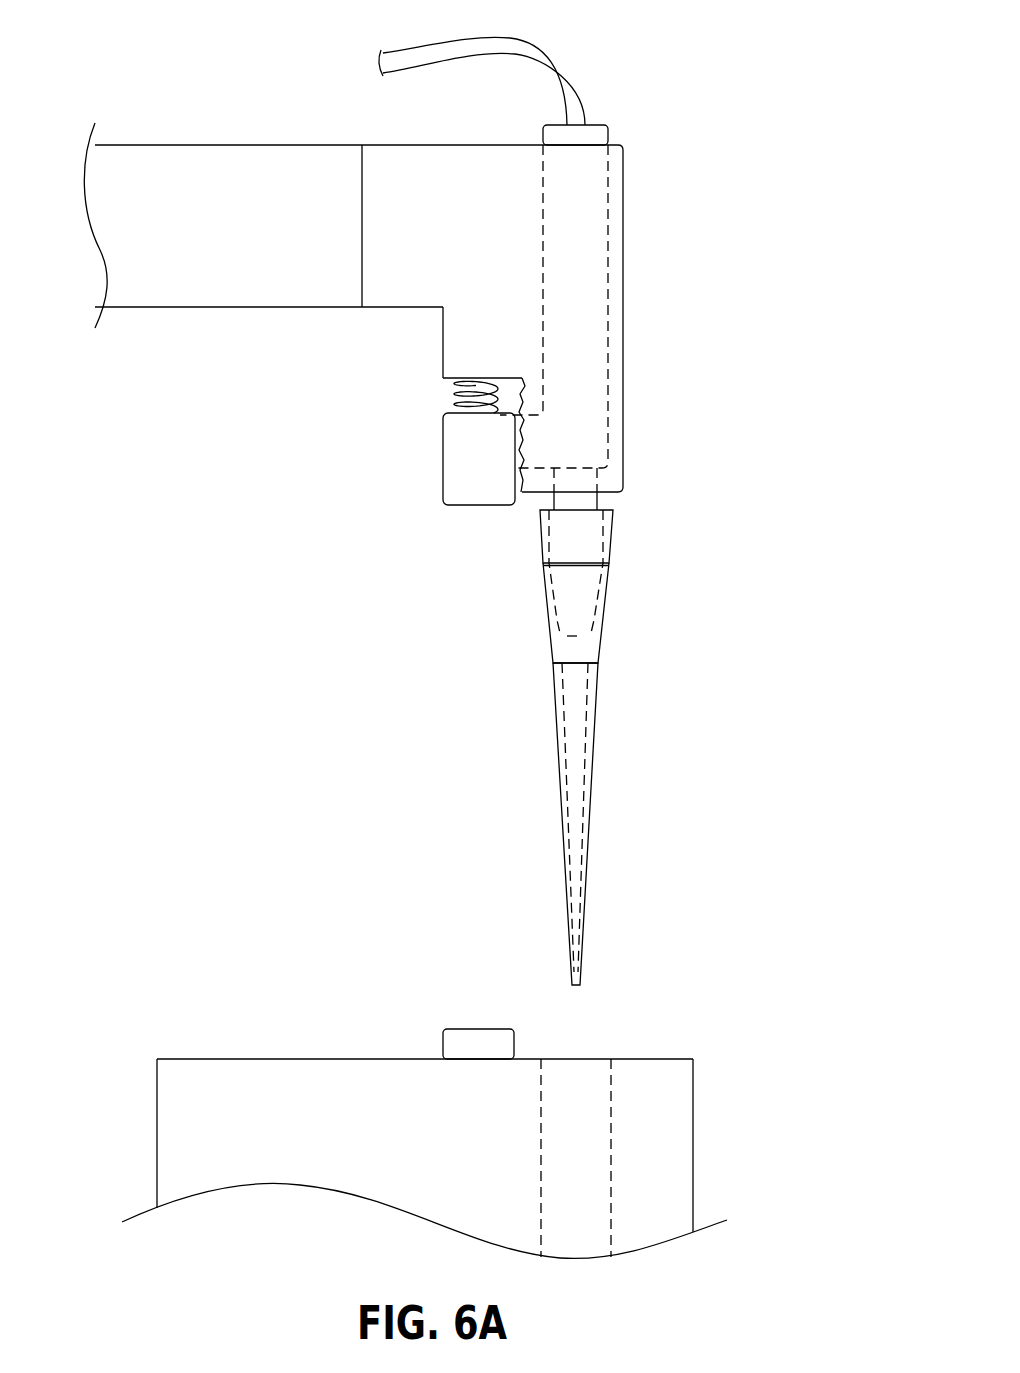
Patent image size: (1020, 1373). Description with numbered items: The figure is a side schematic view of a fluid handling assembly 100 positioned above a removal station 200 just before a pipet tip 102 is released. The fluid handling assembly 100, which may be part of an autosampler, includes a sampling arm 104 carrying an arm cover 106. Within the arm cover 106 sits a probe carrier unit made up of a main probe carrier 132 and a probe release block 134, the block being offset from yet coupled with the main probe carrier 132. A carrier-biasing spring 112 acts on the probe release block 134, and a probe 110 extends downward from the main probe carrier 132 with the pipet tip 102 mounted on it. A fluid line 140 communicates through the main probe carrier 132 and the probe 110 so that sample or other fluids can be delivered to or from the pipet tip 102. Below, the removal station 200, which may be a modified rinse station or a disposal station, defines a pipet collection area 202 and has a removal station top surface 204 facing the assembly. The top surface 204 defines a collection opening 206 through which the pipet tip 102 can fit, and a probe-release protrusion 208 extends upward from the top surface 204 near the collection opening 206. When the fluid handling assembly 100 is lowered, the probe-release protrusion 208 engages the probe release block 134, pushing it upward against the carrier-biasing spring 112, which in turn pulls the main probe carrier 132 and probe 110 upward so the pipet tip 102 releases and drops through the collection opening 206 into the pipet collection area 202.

The fluid handling assembly 100 is at (714, 88).
The pipet tip 102 is at (582, 695).
The sampling arm 104 is at (233, 123).
The arm cover 106 is at (639, 216).
The probe 110 is at (587, 502).
The carrier-biasing spring 112 is at (458, 403).
The main probe carrier 132 is at (609, 318).
The probe release block 134 is at (457, 458).
The fluid line 140 is at (508, 37).
The removal station 200 is at (158, 988).
The pipet collection area 202 is at (603, 1193).
The removal station top surface 204 is at (306, 1057).
The collection opening 206 is at (592, 1057).
The probe-release protrusion 208 is at (440, 1045).